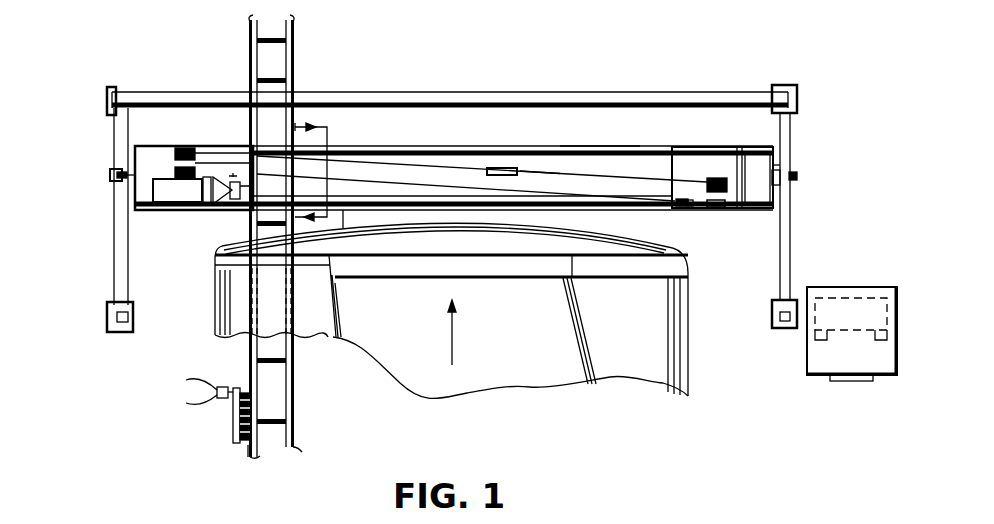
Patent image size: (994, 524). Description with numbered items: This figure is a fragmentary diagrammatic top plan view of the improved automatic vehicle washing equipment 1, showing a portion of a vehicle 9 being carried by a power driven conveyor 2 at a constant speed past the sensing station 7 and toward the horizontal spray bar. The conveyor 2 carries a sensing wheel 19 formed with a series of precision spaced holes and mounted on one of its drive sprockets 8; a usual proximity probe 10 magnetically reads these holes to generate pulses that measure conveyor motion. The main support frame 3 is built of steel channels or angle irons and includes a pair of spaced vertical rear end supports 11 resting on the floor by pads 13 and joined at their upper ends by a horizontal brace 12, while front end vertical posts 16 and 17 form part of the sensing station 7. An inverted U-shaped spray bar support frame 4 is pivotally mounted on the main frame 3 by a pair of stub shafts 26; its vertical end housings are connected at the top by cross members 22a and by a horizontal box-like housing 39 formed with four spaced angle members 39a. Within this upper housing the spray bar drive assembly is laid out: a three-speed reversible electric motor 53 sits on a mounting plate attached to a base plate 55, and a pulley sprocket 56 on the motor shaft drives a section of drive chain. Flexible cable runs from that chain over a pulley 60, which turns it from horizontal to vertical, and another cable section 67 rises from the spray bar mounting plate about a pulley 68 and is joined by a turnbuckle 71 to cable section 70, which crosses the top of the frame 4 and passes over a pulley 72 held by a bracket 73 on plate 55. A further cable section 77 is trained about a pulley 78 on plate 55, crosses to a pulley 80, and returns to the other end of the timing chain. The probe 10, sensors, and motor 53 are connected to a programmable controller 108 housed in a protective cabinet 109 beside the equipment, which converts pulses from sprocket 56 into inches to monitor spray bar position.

The automatic vehicle washing equipment 1 is at (507, 34).
The power driven conveyor 2 is at (288, 54).
The main support frame 3 is at (796, 131).
The spray bar support frame 4 is at (405, 140).
The sensing station 7 is at (108, 320).
The drive sprocket 8 is at (248, 445).
The vehicle 9 is at (623, 372).
The proximity probe 10 is at (222, 403).
The vertical rear end support 11 is at (327, 171).
The horizontal brace 12 is at (581, 95).
The pad 13 is at (115, 88).
The front end vertical post 16 is at (785, 322).
The front end vertical post 17 is at (118, 332).
The sensing wheel 19 is at (233, 436).
The cross member 22a is at (776, 166).
The stub shaft 26 is at (110, 176).
The horizontal box-like housing 39 is at (367, 140).
The angle member 39a is at (596, 146).
The three-speed reversible electric motor 53 is at (167, 190).
The base plate 55 is at (145, 150).
The pulley sprocket 56 is at (212, 206).
The pulley 60 is at (717, 208).
The flexible cable section 67 is at (541, 172).
The pulley 68 is at (722, 177).
The flexible cable section 70 is at (441, 165).
The turnbuckle 71 is at (502, 167).
The pulley 72 is at (191, 148).
The bracket 73 is at (183, 148).
The flexible cable section 77 is at (573, 197).
The pulley 78 is at (173, 166).
The pulley 80 is at (690, 203).
The programmable controller 108 is at (850, 305).
The protective cabinet 109 is at (880, 366).